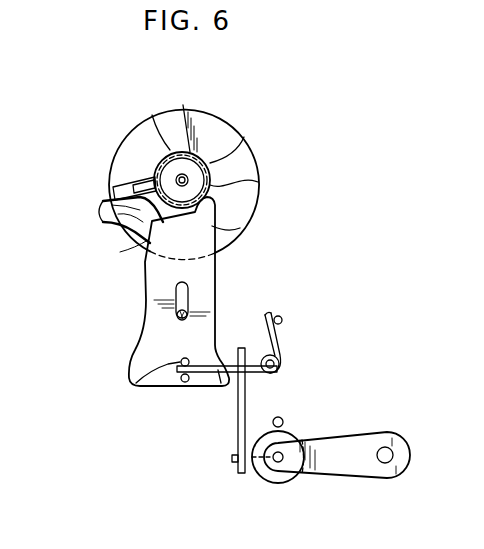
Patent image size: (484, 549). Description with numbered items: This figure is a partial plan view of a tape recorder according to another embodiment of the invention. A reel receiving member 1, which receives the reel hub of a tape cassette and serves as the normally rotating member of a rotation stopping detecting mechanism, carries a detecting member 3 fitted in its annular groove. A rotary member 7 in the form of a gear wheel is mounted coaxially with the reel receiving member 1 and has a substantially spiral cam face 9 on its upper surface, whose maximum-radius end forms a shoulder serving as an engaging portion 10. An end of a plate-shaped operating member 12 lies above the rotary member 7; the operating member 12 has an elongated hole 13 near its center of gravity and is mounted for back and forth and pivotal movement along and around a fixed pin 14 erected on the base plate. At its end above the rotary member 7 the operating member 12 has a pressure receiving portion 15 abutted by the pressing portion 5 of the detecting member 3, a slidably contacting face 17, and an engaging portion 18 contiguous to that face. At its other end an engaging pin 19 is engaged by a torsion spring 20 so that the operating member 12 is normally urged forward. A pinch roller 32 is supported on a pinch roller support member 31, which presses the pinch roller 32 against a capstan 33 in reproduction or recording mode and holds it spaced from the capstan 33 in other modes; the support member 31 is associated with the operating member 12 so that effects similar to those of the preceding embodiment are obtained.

The reel receiving member 1 is at (244, 137).
The detecting member 3 is at (152, 115).
The pressing portion 5 is at (114, 187).
The rotary member 7 is at (183, 105).
The cam face 9 is at (258, 183).
The engaging portion 10 is at (224, 243).
The operating member 12 is at (150, 325).
The elongated hole 13 is at (175, 290).
The fixed pin 14 is at (188, 312).
The pressure receiving portion 15 is at (103, 203).
The slidably contacting face 17 is at (128, 224).
The engaging portion 18 is at (140, 240).
The engaging pin 19 is at (137, 384).
The torsion spring 20 is at (278, 338).
The pinch roller support member 31 is at (362, 434).
The pinch roller 32 is at (260, 478).
The capstan 33 is at (280, 416).